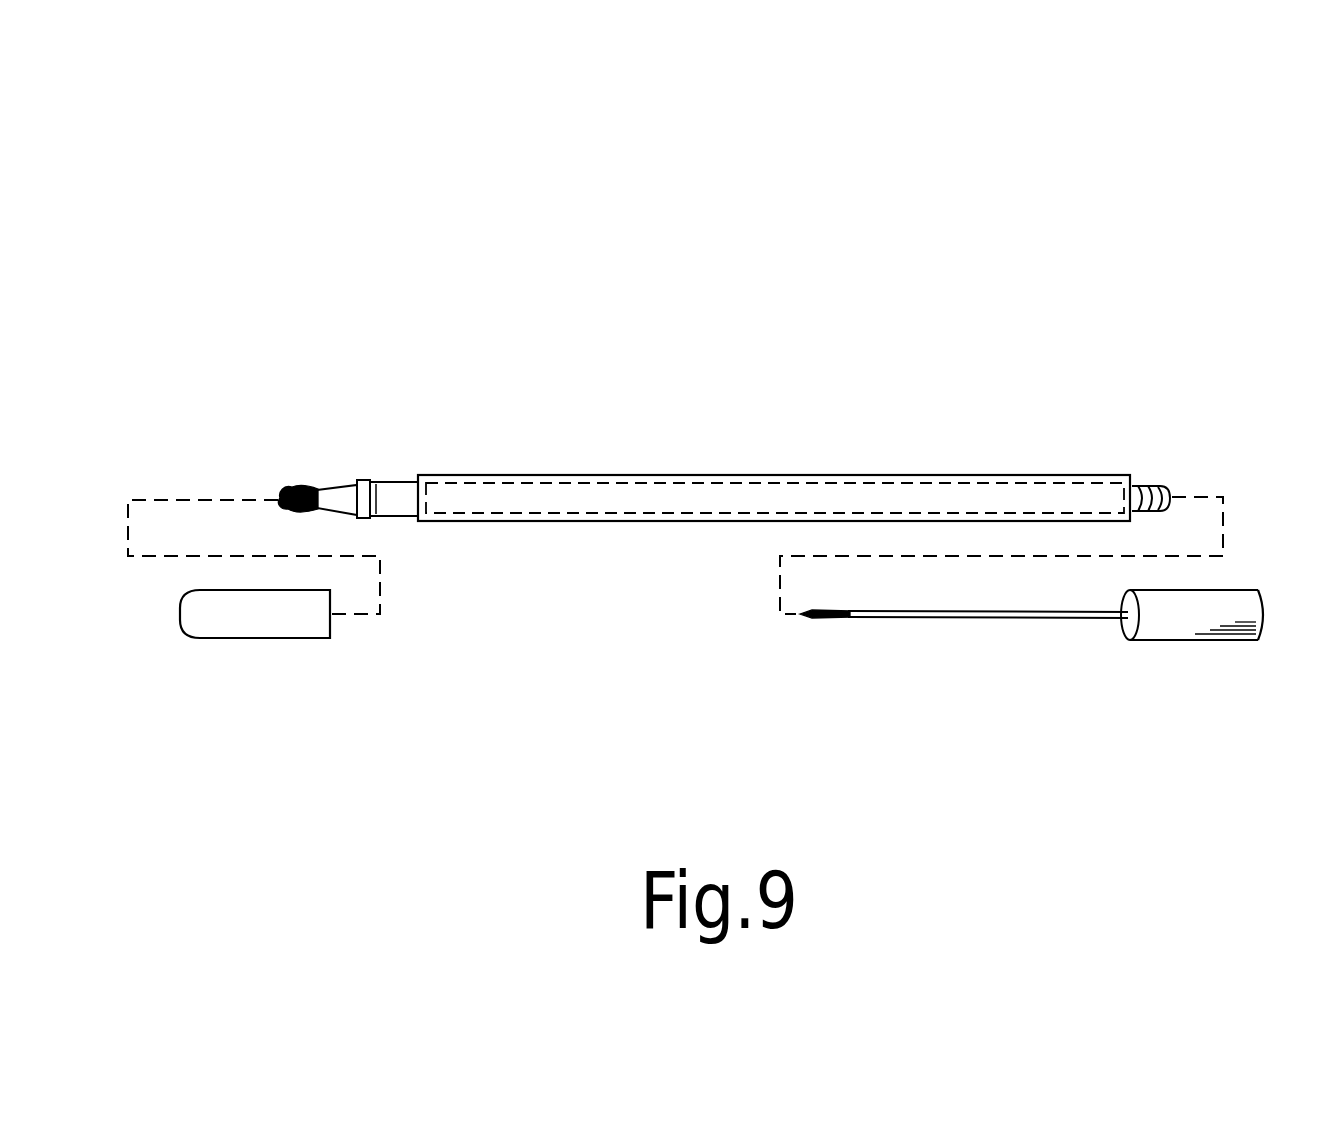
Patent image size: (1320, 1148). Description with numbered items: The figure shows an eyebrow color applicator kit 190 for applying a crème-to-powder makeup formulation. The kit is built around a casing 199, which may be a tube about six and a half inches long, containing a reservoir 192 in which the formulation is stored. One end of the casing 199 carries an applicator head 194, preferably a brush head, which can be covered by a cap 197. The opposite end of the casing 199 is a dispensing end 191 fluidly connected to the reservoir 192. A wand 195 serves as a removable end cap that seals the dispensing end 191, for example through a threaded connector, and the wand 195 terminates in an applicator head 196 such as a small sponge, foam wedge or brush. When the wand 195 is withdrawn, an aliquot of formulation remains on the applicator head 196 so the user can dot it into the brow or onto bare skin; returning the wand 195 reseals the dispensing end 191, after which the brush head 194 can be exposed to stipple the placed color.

The eyebrow color applicator kit 190 is at (725, 246).
The dispensing end 191 is at (1166, 486).
The reservoir 192 is at (543, 483).
The applicator head 194 is at (300, 488).
The wand 195 is at (1068, 622).
The applicator head 196 is at (827, 621).
The cap 197 is at (258, 618).
The casing 199 is at (616, 522).